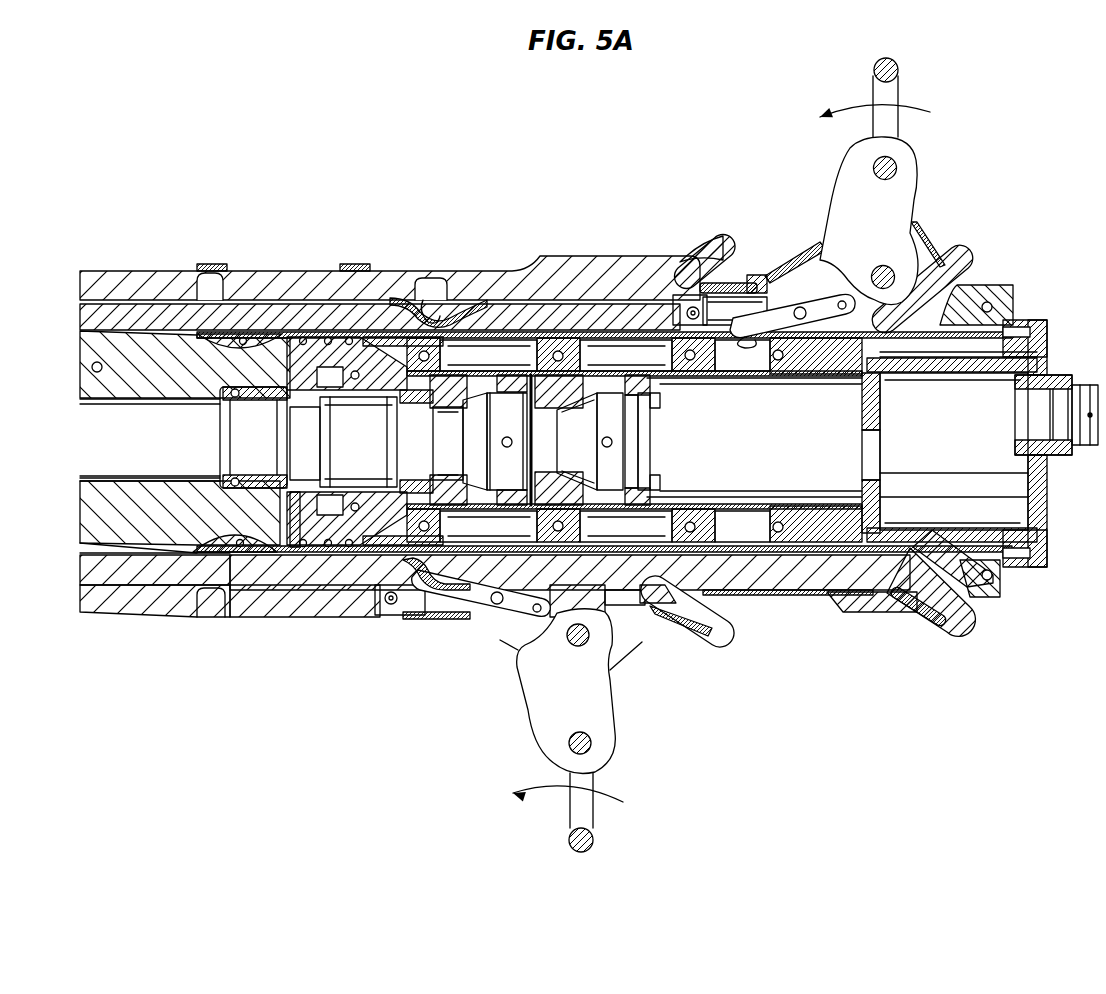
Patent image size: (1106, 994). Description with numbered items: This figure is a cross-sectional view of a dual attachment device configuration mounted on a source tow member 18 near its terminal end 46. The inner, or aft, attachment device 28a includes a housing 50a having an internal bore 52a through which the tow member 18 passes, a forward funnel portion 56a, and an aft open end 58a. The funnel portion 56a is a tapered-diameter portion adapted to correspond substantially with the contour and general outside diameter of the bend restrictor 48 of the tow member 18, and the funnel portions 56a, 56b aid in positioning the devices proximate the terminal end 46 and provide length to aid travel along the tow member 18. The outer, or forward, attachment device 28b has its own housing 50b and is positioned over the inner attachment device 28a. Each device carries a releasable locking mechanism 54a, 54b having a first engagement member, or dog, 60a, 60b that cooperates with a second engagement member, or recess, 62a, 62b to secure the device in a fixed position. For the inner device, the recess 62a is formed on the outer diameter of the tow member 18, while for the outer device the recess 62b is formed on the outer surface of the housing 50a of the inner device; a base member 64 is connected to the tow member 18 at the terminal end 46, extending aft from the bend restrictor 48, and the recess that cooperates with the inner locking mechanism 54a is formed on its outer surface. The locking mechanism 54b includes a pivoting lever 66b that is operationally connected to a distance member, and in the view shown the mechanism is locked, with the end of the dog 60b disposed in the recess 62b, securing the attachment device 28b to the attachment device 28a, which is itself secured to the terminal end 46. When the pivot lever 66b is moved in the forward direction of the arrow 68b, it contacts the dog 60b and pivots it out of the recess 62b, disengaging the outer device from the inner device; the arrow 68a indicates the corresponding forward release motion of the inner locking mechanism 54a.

The tow member 18 is at (166, 527).
The attachment device 28a is at (950, 250).
The attachment device 28b is at (262, 603).
The terminal end 46 is at (962, 436).
The bend restrictor 48 is at (212, 357).
The housing 50a is at (302, 315).
The housing 50b is at (265, 283).
The internal bore 52a is at (634, 341).
The locking mechanism 54a is at (823, 168).
The locking mechanism 54b is at (531, 730).
The funnel portion 56a is at (123, 573).
The funnel portion 56b is at (152, 608).
The open end 58a is at (970, 266).
The first engagement member 60a is at (757, 290).
The first engagement member 60b is at (442, 590).
The second engagement member 62a is at (757, 345).
The second engagement member 62b is at (432, 318).
The base member 64 is at (897, 550).
The pivoting lever 66b is at (563, 691).
The arrow 68a is at (912, 108).
The arrow 68b is at (616, 805).